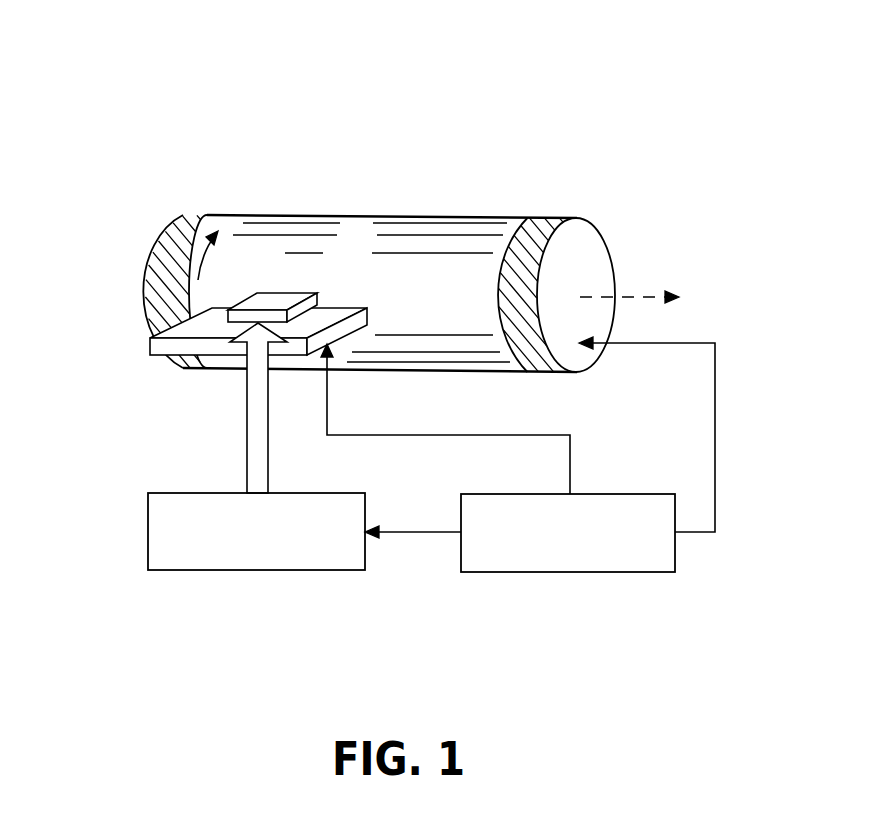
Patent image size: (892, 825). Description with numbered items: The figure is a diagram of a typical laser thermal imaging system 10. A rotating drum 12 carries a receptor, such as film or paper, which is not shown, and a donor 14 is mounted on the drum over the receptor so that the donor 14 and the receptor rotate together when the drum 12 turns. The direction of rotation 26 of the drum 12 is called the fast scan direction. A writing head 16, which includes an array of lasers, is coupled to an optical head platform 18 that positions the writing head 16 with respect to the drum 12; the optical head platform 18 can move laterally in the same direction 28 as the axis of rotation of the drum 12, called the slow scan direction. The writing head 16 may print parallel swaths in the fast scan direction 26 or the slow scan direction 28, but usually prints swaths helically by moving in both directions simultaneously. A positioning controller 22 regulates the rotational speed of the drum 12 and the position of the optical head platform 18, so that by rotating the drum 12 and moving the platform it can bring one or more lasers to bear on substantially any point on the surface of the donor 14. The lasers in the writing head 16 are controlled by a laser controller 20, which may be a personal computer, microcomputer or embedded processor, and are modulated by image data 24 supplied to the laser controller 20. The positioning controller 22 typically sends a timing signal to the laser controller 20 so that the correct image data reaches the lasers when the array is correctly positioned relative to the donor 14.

The laser thermal imaging system 10 is at (253, 105).
The rotating drum 12 is at (147, 285).
The donor 14 is at (440, 295).
The writing head 16 is at (288, 294).
The optical head platform 18 is at (148, 348).
The laser controller 20 is at (148, 541).
The positioning controller 22 is at (645, 572).
The image data 24 is at (247, 456).
The direction of rotation 26 is at (205, 255).
The direction of axis of rotation 28 is at (623, 297).